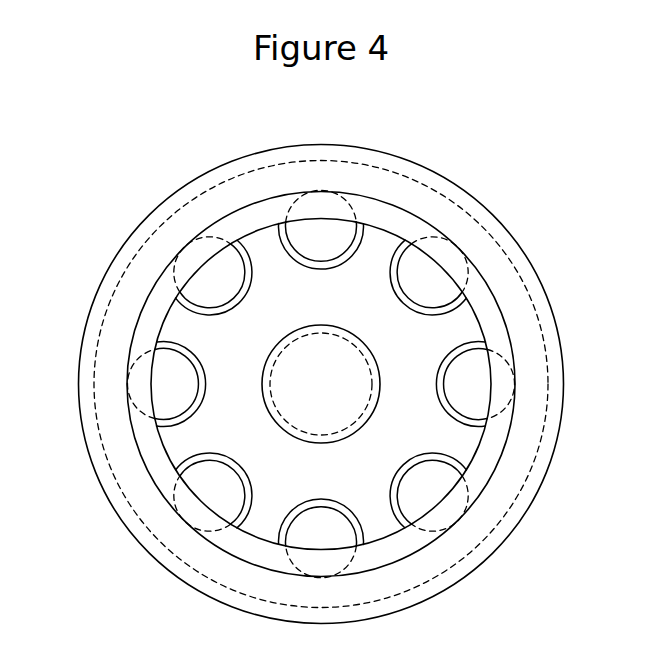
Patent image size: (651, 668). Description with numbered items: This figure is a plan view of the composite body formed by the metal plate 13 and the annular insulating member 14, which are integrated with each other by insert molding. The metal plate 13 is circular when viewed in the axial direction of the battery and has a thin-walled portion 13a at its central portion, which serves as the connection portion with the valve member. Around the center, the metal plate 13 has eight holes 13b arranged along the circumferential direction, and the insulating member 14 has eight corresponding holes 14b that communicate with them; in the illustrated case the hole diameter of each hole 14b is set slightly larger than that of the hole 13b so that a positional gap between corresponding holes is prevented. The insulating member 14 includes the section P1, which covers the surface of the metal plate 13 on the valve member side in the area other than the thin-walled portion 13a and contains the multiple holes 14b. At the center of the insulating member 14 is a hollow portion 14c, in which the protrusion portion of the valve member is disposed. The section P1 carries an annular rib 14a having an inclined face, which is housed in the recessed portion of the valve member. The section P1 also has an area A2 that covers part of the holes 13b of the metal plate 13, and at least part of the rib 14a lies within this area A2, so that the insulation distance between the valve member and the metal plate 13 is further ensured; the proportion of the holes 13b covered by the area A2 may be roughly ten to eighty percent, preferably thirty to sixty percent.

The metal plate 13 is at (77, 343).
The thin-walled portion 13a is at (340, 370).
The hole 13b is at (302, 237).
The annular insulating member 14 is at (117, 303).
The annular rib 14a is at (390, 218).
The hole 14b is at (372, 527).
The hollow portion 14c is at (355, 398).
The area A2 is at (320, 203).
The section P1 is at (177, 440).